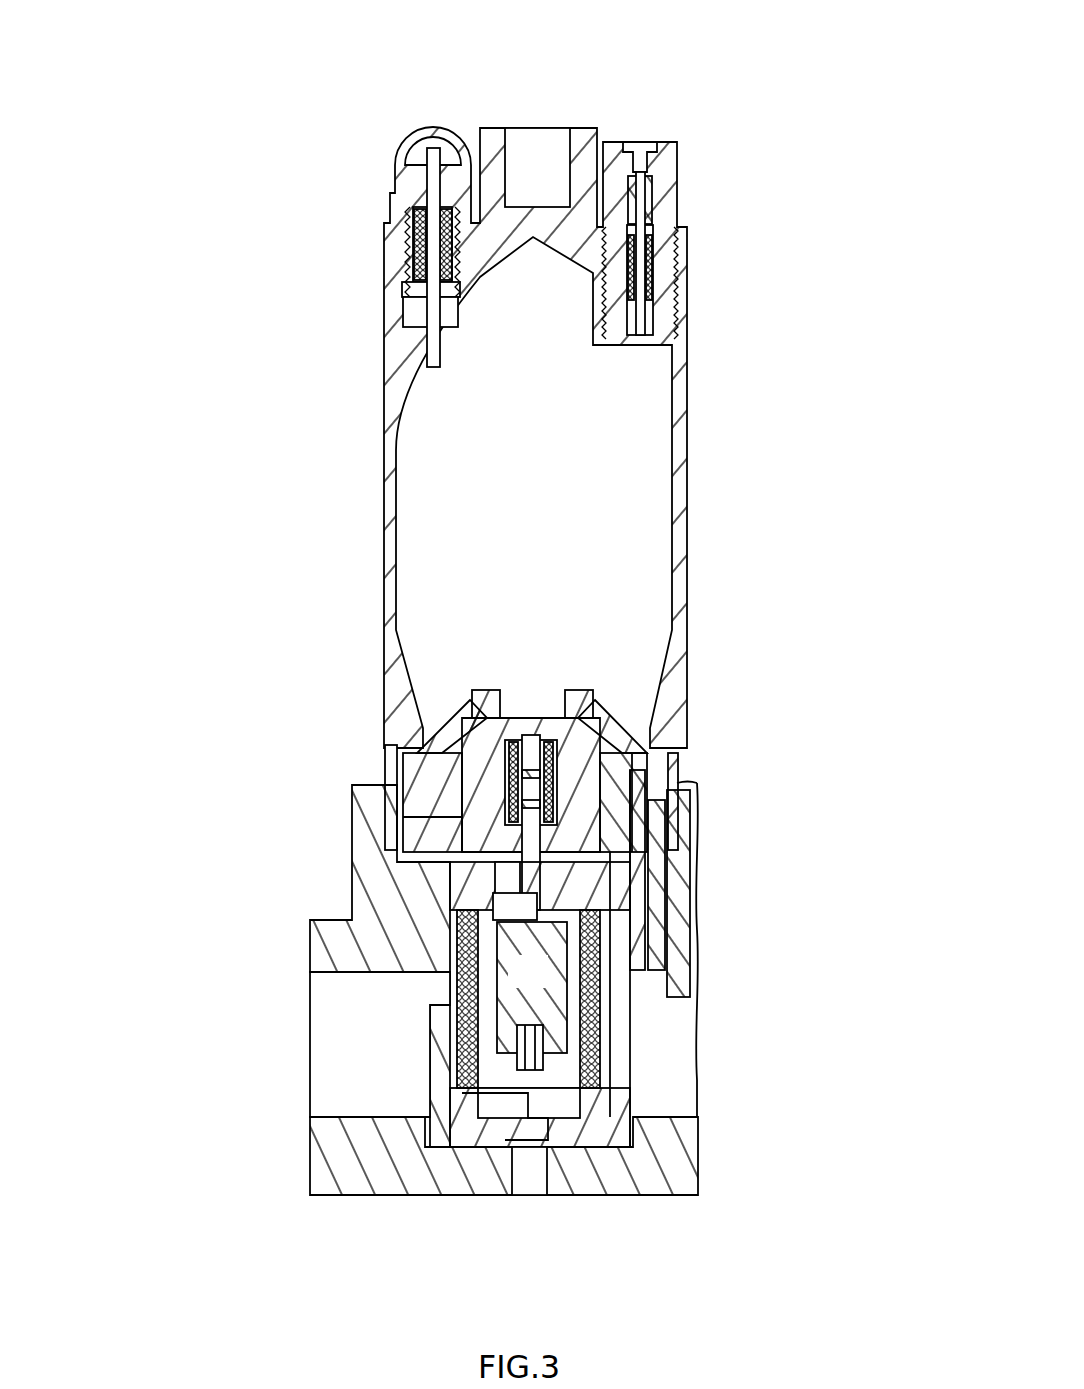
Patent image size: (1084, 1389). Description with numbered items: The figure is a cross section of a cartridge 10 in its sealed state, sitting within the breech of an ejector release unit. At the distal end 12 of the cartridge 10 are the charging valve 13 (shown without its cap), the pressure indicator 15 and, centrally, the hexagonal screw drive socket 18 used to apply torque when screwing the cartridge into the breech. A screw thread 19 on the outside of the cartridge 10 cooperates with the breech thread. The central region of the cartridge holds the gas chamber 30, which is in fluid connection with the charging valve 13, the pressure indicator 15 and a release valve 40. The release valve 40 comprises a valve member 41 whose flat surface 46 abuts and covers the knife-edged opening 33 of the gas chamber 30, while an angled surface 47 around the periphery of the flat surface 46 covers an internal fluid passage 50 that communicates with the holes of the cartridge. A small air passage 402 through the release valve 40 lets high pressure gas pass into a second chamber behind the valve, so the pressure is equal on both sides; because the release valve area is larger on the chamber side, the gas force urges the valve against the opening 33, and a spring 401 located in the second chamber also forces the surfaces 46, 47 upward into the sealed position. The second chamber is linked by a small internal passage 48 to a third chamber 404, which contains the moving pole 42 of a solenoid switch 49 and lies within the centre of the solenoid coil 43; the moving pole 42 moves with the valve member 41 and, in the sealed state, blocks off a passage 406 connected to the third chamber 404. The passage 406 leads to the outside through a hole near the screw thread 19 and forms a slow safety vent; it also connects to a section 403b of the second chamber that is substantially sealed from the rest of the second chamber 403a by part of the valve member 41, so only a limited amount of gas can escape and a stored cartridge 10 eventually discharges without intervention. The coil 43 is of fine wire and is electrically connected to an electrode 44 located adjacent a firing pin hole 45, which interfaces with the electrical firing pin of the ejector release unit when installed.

The cartridge 10 is at (308, 511).
The distal end 12 is at (333, 155).
The charging valve 13 is at (660, 111).
The pressure indicator 15 is at (420, 96).
The hexagonal screw drive socket 18 is at (553, 150).
The screw thread 19 is at (677, 774).
The gas chamber 30 is at (555, 436).
The opening 33 is at (515, 695).
The release valve 40 is at (437, 786).
The valve member 41 is at (477, 807).
The moving pole 42 is at (532, 987).
The solenoid coil 43 is at (470, 1029).
The electrode 44 is at (530, 1127).
The firing pin hole 45 is at (532, 1178).
The flat surface 46 is at (553, 720).
The angled surface 47 is at (598, 740).
The internal passage 48 is at (697, 908).
The solenoid switch 49 is at (426, 991).
The internal fluid passage 50 is at (638, 930).
The spring 401 is at (545, 806).
The air passage 402 is at (596, 732).
The rest of the second chamber 403a is at (545, 778).
The section of the second chamber 403b is at (570, 885).
The third chamber 404 is at (545, 1052).
The passage 406 is at (443, 853).